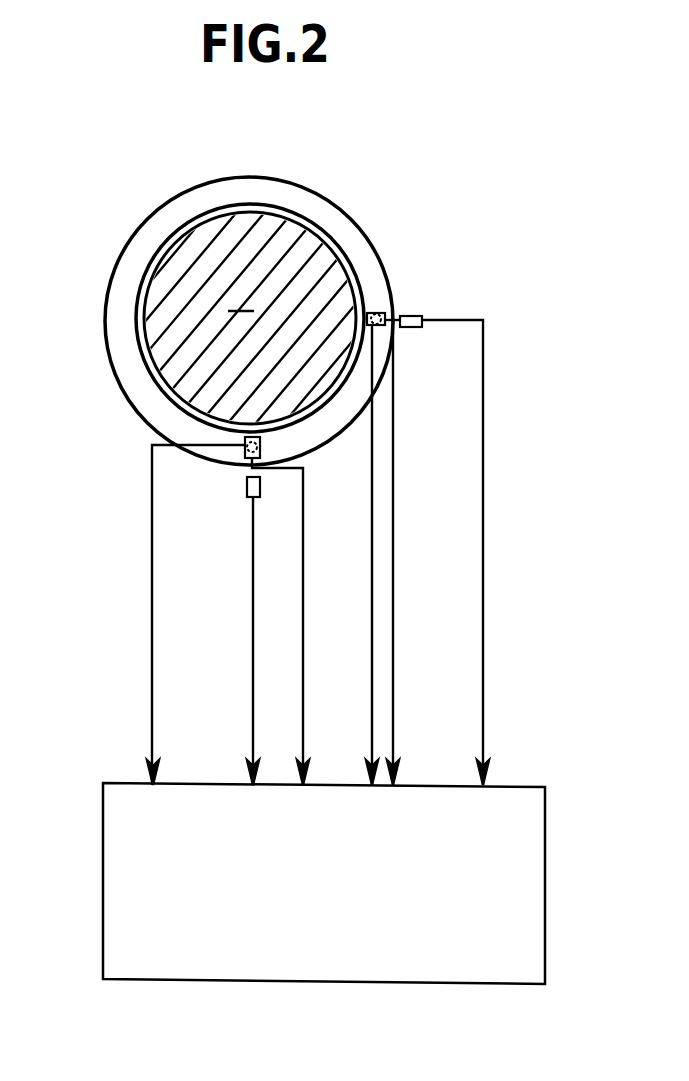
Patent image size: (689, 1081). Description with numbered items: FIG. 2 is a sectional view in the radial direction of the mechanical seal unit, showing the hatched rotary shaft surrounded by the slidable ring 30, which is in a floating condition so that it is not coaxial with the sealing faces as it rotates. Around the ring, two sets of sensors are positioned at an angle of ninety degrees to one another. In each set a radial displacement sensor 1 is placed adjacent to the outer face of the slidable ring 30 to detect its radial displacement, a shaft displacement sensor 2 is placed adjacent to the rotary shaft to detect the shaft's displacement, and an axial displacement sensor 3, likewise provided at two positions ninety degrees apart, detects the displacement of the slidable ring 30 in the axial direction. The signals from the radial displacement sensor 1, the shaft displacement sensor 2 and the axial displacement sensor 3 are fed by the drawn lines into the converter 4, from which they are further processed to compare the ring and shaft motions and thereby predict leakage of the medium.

The slidable ring 30 is at (325, 212).
The axial displacement sensor 3 is at (373, 278).
The shaft displacement sensor 2 is at (380, 311).
The radial displacement sensor 1 is at (412, 330).
The converter 4 is at (104, 787).